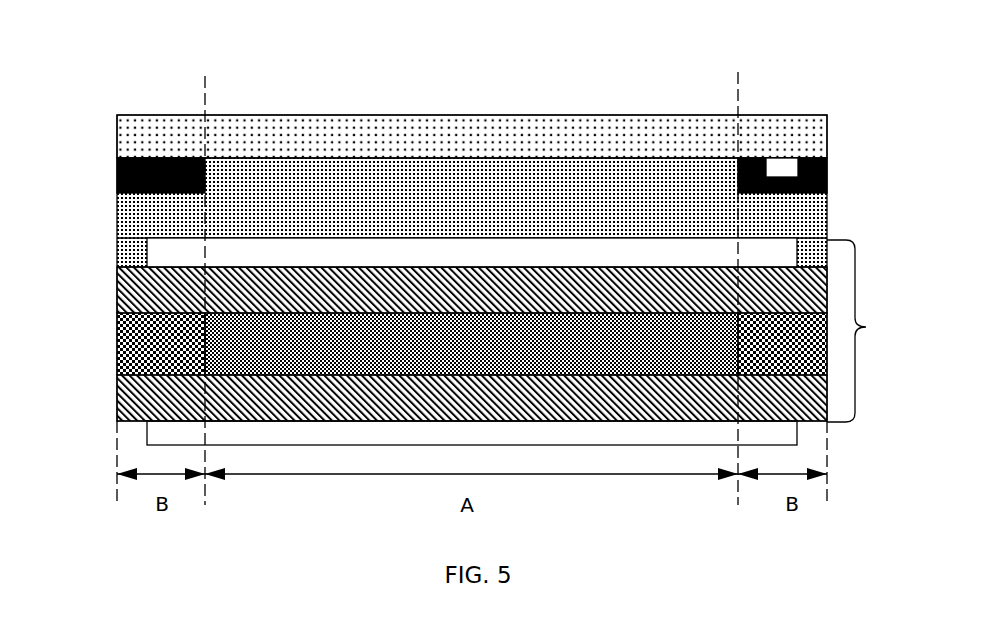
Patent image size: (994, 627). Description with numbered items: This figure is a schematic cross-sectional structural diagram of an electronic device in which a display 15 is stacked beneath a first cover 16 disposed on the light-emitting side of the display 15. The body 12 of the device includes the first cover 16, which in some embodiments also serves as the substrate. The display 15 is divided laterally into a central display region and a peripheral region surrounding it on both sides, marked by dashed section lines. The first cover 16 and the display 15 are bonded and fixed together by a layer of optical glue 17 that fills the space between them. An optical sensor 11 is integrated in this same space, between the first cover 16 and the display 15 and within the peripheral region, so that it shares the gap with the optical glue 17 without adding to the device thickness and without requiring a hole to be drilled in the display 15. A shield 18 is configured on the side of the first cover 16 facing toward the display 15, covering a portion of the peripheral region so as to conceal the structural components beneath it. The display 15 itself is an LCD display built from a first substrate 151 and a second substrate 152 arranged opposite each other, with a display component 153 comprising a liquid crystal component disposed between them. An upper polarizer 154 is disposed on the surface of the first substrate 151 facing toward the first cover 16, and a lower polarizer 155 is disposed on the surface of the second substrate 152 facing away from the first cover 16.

The first cover 16 is at (293, 115).
The body 12 is at (530, 145).
The optical glue 17 is at (422, 190).
The shield 18 is at (115, 179).
The optical sensor 11 is at (782, 173).
The display 15 is at (477, 330).
The upper polarizer 154 is at (155, 252).
The first substrate 151 is at (155, 290).
The display component 153 is at (263, 342).
The second substrate 152 is at (155, 392).
The lower polarizer 155 is at (152, 435).